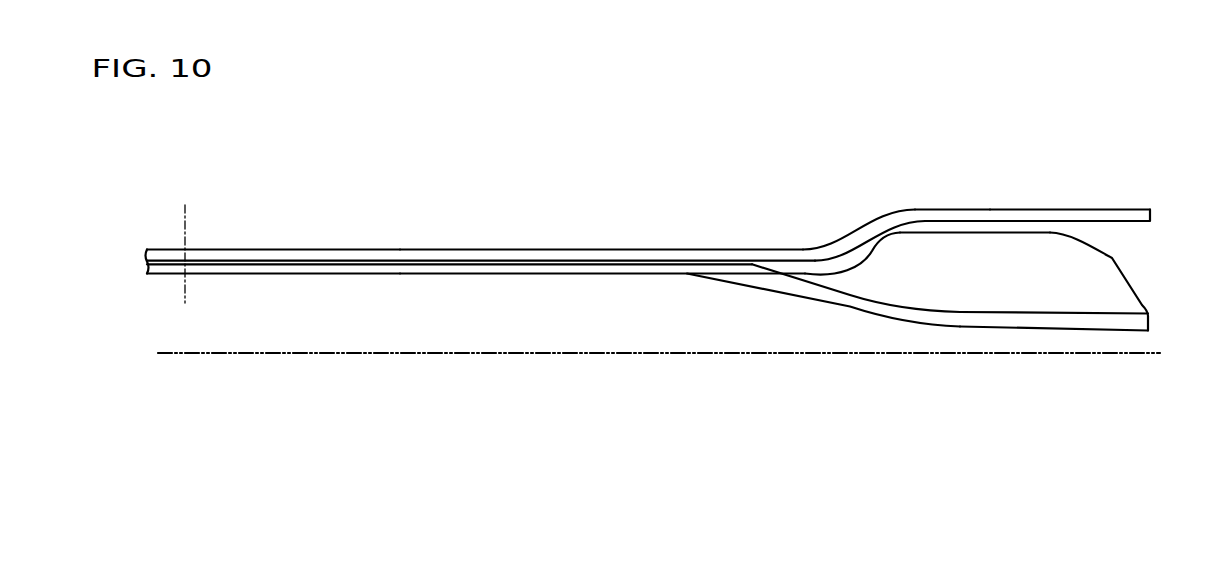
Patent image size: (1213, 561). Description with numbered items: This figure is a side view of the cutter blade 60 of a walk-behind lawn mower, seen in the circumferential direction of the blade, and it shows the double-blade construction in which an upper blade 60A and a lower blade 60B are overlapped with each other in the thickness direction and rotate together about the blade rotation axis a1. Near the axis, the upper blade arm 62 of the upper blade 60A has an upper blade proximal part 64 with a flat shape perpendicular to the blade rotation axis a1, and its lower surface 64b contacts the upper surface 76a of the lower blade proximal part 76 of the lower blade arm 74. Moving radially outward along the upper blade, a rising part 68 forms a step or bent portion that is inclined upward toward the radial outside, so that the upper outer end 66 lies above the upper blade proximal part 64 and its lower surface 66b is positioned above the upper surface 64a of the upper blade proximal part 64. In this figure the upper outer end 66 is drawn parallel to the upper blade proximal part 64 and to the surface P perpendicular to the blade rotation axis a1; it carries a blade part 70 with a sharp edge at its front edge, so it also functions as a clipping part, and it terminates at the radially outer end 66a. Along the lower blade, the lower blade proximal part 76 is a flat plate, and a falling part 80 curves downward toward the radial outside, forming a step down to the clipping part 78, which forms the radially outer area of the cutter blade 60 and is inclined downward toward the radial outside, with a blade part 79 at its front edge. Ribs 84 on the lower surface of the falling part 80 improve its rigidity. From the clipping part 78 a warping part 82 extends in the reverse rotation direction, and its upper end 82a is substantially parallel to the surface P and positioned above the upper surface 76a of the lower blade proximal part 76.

The cutter blade 60 is at (420, 109).
The upper blade 60A is at (336, 247).
The lower blade 60B is at (314, 277).
The upper blade arm 62 is at (980, 135).
The upper blade proximal part 64 is at (481, 238).
The upper surface of upper blade proximal part 64a is at (612, 249).
The lower surface of upper blade proximal part 64b is at (555, 262).
The upper outer end 66 is at (1055, 232).
The radially outer end of upper outer end 66a is at (1068, 209).
The lower surface of upper outer end 66b is at (1113, 258).
The rising part 68 is at (867, 222).
The blade part 70 is at (1012, 209).
The lower blade arm 74 is at (1020, 405).
The lower blade proximal part 76 is at (476, 298).
The upper surface of lower blade proximal part 76a is at (503, 260).
The clipping part 78 is at (1038, 355).
The blade part 79 is at (1087, 330).
The falling part 80 is at (800, 278).
The warping part 82 is at (927, 287).
The upper end of warping part 82a is at (933, 232).
The rib 84 is at (763, 288).
The surface perpendicular to blade rotation axis P is at (396, 352).
The blade rotation axis a1 is at (186, 240).